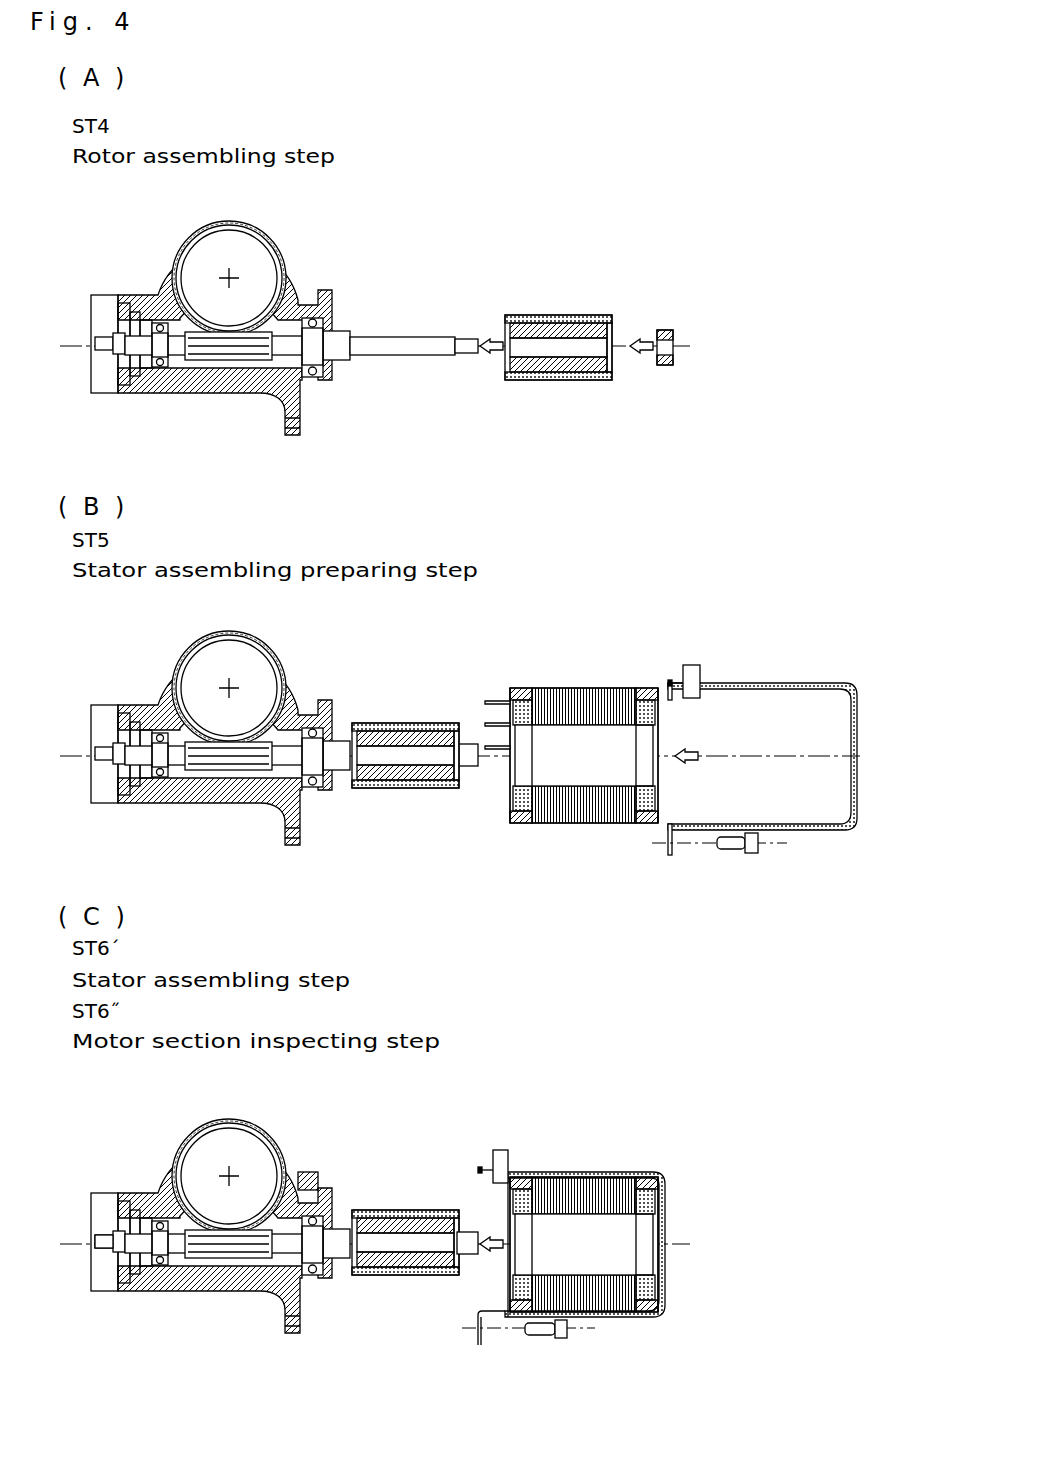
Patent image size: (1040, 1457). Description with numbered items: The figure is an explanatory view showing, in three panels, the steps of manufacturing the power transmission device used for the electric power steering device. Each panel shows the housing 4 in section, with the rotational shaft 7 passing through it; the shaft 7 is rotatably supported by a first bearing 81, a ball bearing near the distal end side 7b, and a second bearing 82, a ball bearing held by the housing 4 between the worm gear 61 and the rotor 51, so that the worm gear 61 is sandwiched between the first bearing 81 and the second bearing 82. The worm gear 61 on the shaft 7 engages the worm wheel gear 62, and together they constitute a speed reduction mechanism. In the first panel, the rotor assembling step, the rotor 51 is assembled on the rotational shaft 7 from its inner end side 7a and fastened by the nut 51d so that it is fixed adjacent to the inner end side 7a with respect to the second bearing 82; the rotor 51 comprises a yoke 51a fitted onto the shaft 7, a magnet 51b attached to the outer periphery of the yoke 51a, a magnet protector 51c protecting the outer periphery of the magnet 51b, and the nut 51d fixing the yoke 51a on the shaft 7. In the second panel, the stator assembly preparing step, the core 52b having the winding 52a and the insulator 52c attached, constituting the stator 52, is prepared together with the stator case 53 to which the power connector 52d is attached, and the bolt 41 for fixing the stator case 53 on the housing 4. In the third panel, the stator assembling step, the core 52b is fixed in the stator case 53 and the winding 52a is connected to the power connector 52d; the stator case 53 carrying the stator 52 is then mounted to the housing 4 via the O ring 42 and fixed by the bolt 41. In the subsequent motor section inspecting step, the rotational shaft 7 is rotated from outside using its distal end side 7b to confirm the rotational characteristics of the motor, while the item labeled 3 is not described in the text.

The worm wheel 3 is at (232, 248).
The housing 4 is at (293, 255).
The rotational shaft 7 is at (343, 335).
The inner end side 7a is at (408, 357).
The distal end side 7b is at (102, 1235).
The bolt 41 is at (753, 847).
The O ring 42 is at (307, 1172).
The rotor 51 is at (516, 732).
The yoke 51a is at (538, 325).
The magnet 51b is at (578, 318).
The magnet protector 51c is at (640, 310).
The nut 51d is at (674, 333).
The stator 52 is at (597, 938).
The winding 52a is at (517, 688).
The core 52b is at (570, 695).
The insulator 52c is at (660, 977).
The power connector 52d is at (695, 667).
The stator case 53 is at (765, 685).
The worm gear 61 is at (218, 357).
The worm wheel gear 62 is at (278, 243).
The first bearing 81 is at (148, 395).
The second bearing 82 is at (327, 393).